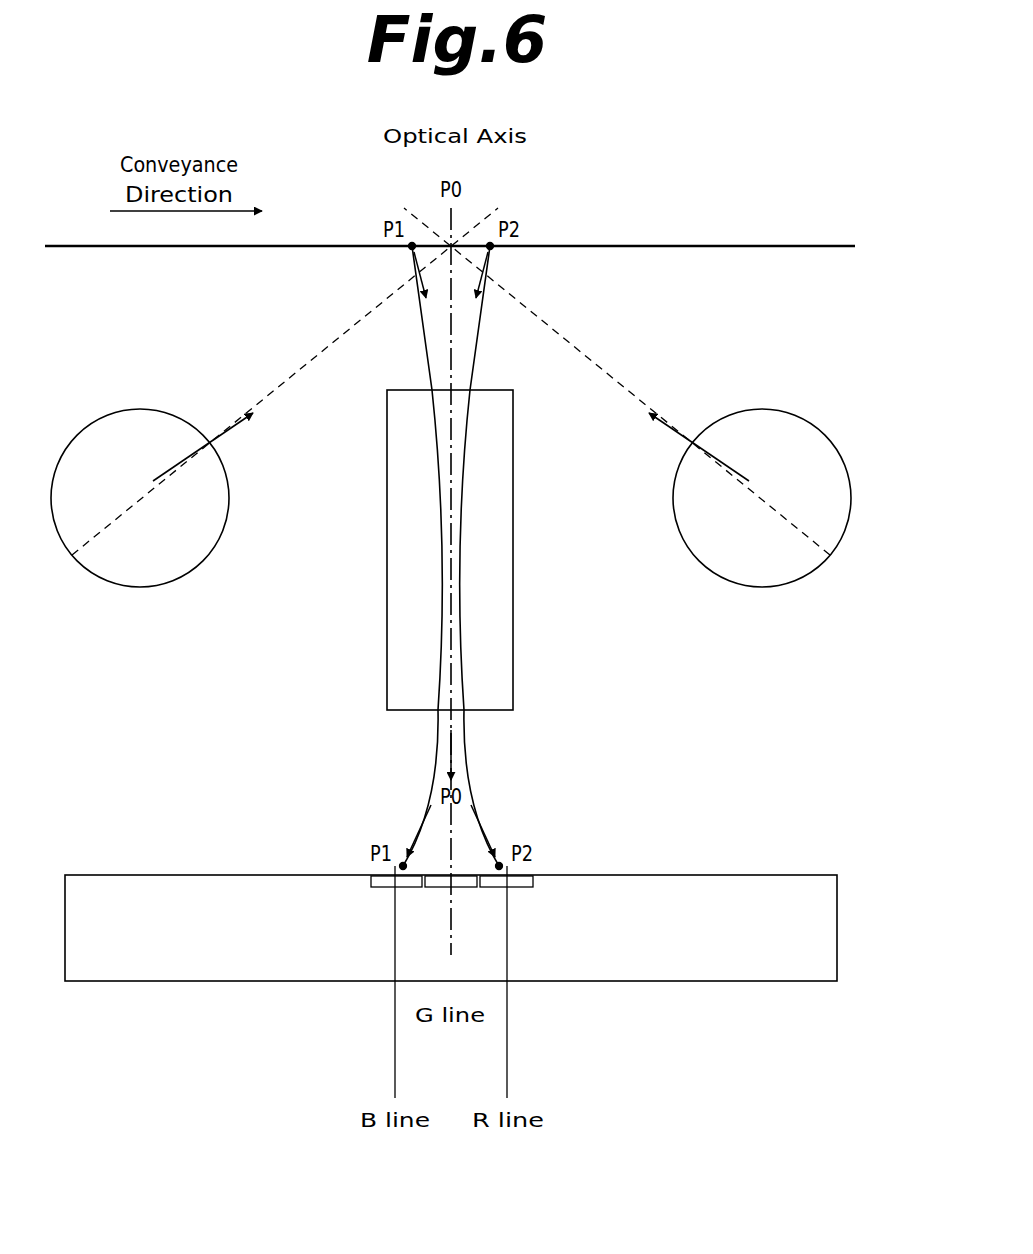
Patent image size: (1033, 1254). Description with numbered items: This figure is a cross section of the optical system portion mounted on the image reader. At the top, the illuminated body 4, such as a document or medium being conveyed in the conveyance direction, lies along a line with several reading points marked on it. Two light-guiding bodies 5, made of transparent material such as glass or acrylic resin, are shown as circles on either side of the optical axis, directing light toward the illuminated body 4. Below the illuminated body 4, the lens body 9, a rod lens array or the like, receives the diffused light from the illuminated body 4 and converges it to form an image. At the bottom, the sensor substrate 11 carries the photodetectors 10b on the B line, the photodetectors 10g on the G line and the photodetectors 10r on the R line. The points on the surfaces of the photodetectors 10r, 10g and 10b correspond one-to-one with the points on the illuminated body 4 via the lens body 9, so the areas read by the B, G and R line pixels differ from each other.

The illuminated body 4 is at (665, 246).
The light-guiding body 5 is at (140, 587).
The lens body 9 is at (387, 597).
The photodetectors on the B line 10b is at (385, 886).
The photodetectors on the G line 10g is at (462, 886).
The photodetectors on the R line 10r is at (533, 880).
The sensor substrate 11 is at (670, 982).